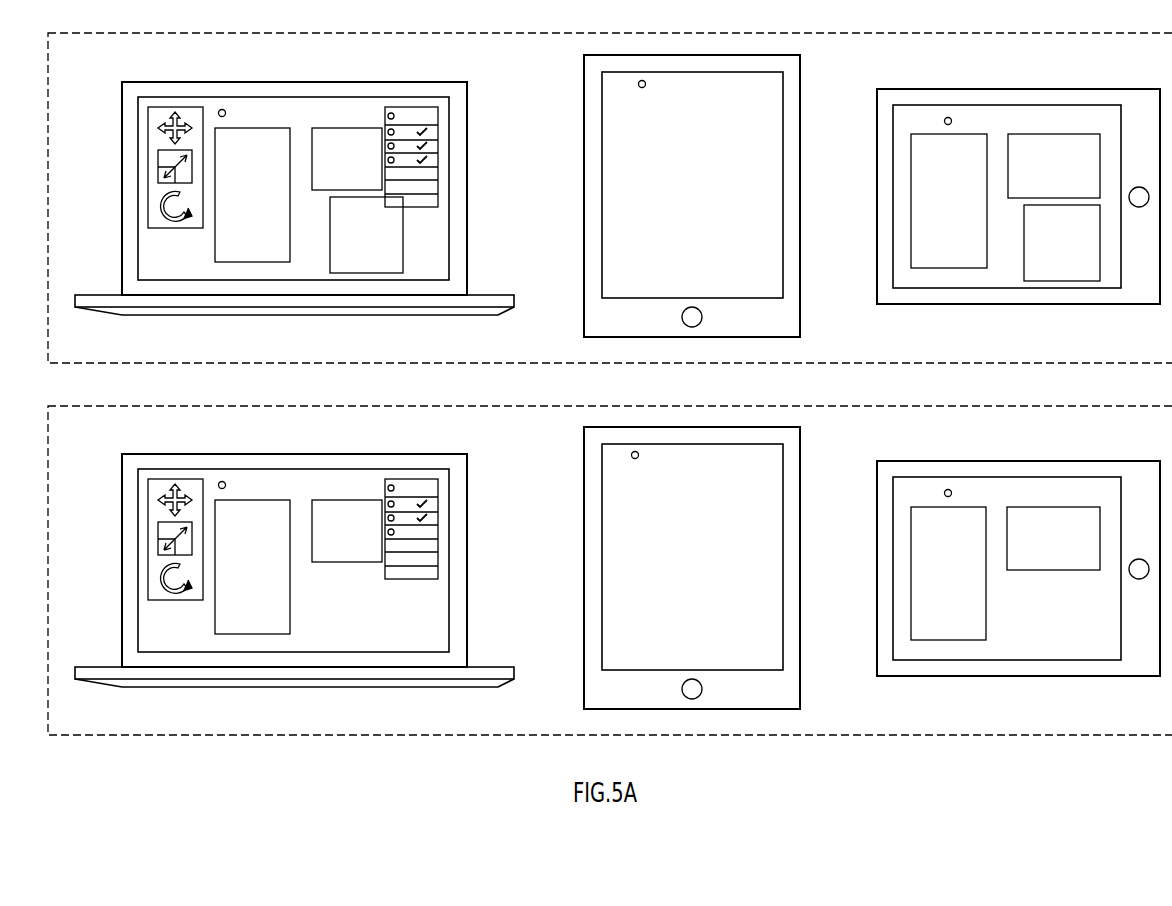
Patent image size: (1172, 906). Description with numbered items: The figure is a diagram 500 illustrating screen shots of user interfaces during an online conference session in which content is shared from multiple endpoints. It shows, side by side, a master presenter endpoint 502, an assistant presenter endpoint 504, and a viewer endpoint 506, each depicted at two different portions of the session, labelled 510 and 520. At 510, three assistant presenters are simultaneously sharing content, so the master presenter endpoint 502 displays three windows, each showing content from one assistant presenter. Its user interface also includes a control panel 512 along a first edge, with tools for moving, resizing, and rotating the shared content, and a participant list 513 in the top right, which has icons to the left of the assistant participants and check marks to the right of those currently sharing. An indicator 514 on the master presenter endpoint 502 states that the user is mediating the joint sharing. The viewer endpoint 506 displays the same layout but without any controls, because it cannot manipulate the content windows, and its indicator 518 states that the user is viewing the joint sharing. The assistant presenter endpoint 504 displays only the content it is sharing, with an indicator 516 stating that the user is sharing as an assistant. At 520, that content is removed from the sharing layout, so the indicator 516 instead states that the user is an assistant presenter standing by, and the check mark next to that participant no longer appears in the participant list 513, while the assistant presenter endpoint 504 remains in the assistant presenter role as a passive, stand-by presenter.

The diagram 500 is at (853, 800).
The master presenter endpoint 502 is at (289, 369).
The assistant presenter endpoint 504 is at (572, 189).
The viewer endpoint 506 is at (990, 367).
The first portion of the online conference session 510 is at (117, 33).
The control panel 512 is at (148, 125).
The participant list 513 is at (438, 130).
The indicator 514 is at (248, 103).
The indicator 516 is at (656, 92).
The indicator 518 is at (997, 115).
The second portion of the online conference session 520 is at (117, 406).